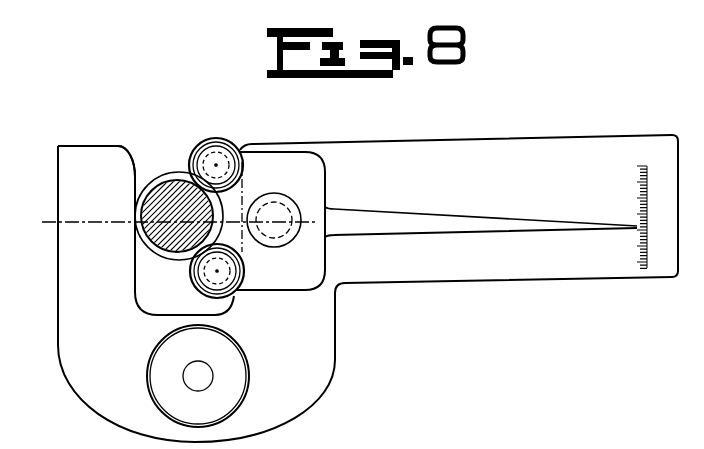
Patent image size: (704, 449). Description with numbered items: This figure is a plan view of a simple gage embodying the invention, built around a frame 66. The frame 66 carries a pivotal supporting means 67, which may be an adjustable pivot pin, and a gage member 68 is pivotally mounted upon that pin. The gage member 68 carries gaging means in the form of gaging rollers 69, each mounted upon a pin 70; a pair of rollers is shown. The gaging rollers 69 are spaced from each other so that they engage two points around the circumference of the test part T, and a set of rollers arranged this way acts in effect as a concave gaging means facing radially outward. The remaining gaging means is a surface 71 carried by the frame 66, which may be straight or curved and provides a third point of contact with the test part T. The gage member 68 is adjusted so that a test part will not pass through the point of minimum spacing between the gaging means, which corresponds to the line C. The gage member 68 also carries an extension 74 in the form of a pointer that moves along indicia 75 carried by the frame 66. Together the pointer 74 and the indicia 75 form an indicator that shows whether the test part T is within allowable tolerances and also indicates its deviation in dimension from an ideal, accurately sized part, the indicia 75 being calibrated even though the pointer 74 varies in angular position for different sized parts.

The frame 66 is at (326, 366).
The pivotal supporting means 67 is at (282, 244).
The gage member 68 is at (272, 158).
The gaging rollers 69 is at (216, 139).
The pin 70 is at (213, 158).
The surface 71 is at (137, 177).
The extension 74 is at (452, 229).
The indicia 75 is at (652, 265).
The test part T is at (172, 187).
The line C is at (170, 207).